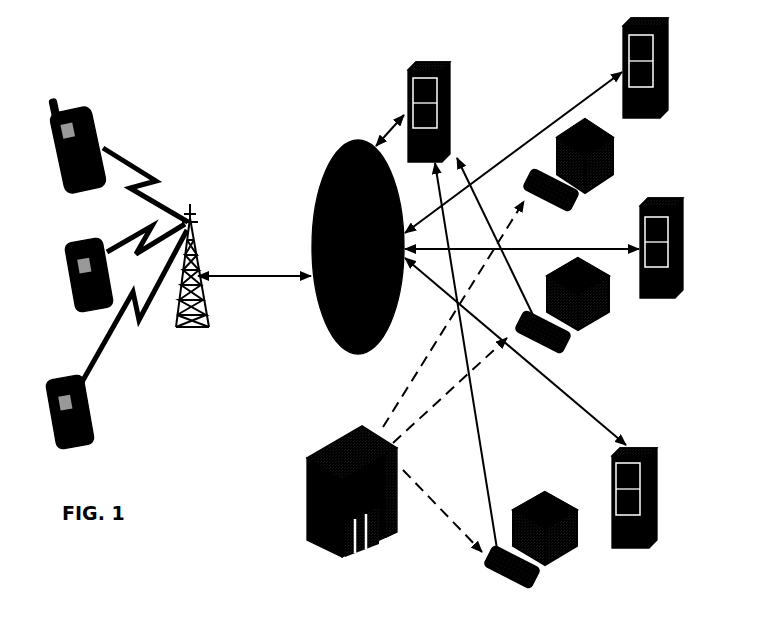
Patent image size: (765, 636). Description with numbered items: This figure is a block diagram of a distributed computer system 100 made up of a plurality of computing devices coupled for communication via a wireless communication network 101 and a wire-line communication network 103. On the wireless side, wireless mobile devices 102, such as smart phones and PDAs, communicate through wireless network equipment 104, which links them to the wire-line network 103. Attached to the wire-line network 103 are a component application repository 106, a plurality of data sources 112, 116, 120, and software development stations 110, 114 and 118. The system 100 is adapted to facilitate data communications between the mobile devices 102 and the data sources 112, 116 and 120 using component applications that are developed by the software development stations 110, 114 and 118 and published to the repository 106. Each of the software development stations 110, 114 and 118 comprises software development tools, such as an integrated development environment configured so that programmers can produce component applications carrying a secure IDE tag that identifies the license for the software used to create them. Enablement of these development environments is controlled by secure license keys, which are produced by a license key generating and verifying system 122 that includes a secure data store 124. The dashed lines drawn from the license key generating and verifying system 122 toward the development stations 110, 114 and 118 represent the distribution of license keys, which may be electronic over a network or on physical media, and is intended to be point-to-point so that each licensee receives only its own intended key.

The distributed computer system 100 is at (283, 84).
The wireless communication network 101 is at (208, 187).
The wireless mobile devices 102 is at (62, 190).
The wire-line communication network 103 is at (343, 372).
The wireless network equipment 104 is at (180, 329).
The component application repository 106 is at (470, 308).
The software development station 110 is at (578, 203).
The data source 112 is at (626, 118).
The software development station 114 is at (532, 347).
The data source 116 is at (642, 296).
The software development station 118 is at (508, 583).
The data source 120 is at (614, 548).
The license key generating and verifying system 122 is at (306, 540).
The secure data store 124 is at (362, 557).